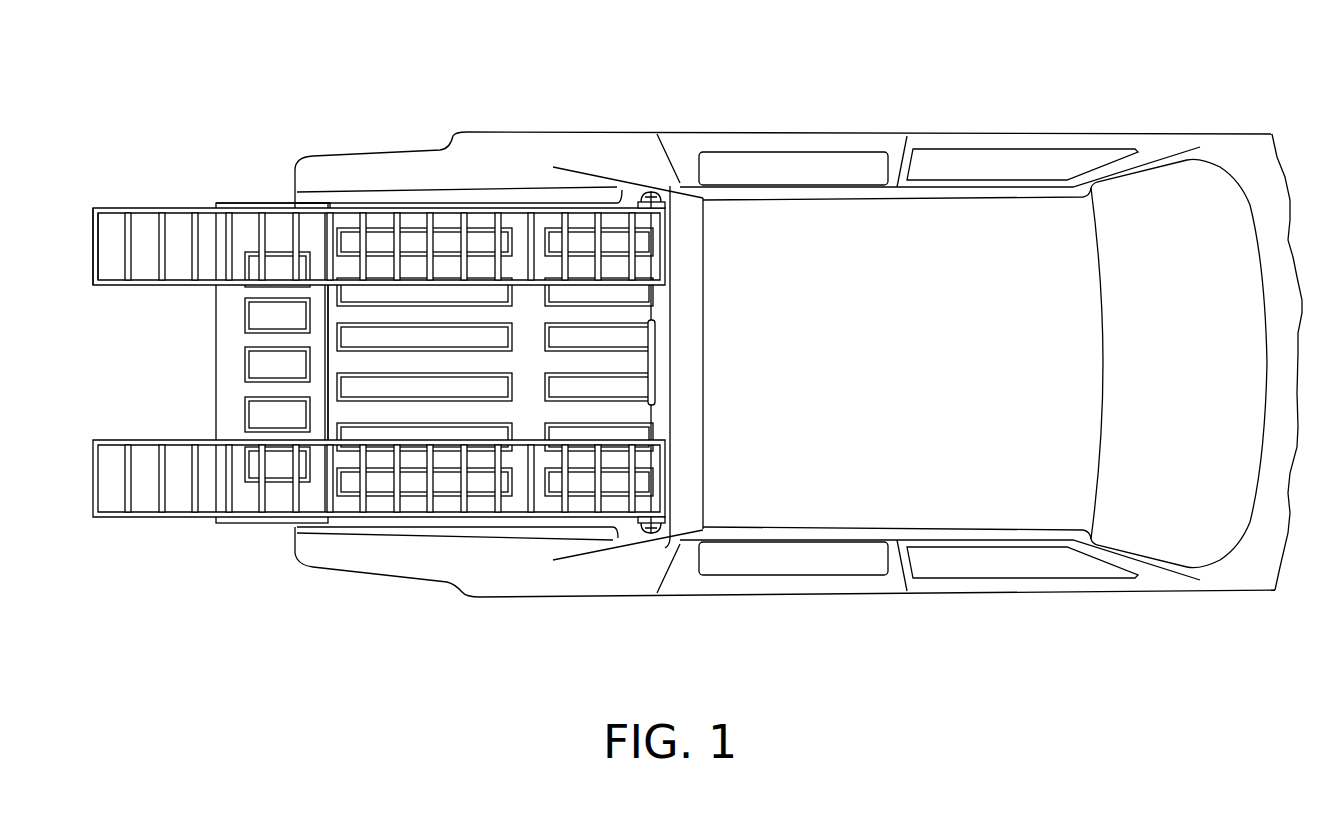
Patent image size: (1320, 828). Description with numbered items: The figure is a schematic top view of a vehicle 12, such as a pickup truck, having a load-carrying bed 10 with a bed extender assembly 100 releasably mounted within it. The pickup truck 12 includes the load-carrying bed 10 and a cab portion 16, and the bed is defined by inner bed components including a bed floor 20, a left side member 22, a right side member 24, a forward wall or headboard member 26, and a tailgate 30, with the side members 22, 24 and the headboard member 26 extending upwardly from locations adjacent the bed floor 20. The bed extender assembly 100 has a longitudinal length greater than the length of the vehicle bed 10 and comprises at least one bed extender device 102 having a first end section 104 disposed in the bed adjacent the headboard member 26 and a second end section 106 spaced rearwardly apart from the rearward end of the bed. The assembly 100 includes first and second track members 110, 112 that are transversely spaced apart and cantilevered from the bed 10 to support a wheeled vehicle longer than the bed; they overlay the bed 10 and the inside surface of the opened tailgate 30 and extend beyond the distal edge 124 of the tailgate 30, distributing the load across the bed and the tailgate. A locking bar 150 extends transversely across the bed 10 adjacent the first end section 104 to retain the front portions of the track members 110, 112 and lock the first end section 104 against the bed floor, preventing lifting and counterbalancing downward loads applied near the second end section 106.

The load-carrying bed 10 is at (531, 358).
The vehicle 12 is at (778, 95).
The cab portion 16 is at (860, 612).
The bed floor 20 is at (662, 309).
The left side member 22 is at (372, 195).
The right side member 24 is at (386, 528).
The headboard member 26 is at (676, 369).
The tailgate 30 is at (216, 398).
The bed extender assembly 100 is at (371, 238).
The bed extender device 102 is at (245, 186).
The first end section 104 is at (629, 185).
The second end section 106 is at (102, 300).
The first track member 110 is at (445, 225).
The second track member 112 is at (150, 522).
The distal edge 124 is at (216, 318).
The locking bar 150 is at (655, 342).